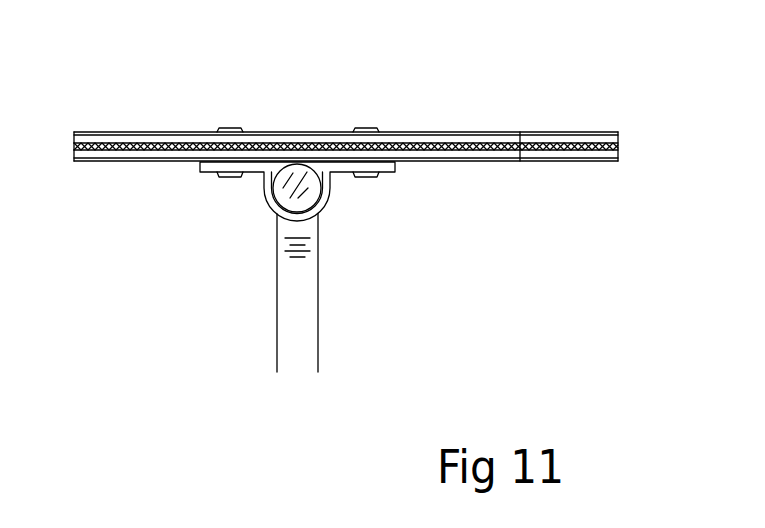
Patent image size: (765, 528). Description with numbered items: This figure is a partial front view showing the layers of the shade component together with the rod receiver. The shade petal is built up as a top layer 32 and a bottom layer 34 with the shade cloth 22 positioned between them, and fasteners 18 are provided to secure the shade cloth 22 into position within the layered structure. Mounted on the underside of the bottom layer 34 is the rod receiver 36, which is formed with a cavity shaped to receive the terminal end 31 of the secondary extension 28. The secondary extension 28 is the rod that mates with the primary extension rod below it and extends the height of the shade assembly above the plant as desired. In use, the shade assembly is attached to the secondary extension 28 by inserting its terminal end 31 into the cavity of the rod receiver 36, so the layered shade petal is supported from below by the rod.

The fasteners 18 is at (237, 117).
The shade cloth 22 is at (360, 128).
The secondary extension 28 is at (274, 297).
The terminal end 31 is at (300, 188).
The top layer 32 is at (105, 124).
The bottom layer 34 is at (139, 164).
The rod receiver 36 is at (332, 183).